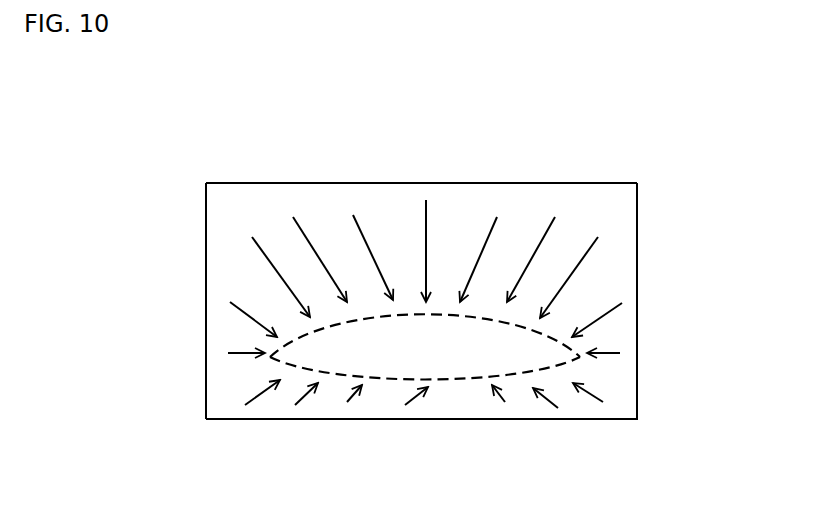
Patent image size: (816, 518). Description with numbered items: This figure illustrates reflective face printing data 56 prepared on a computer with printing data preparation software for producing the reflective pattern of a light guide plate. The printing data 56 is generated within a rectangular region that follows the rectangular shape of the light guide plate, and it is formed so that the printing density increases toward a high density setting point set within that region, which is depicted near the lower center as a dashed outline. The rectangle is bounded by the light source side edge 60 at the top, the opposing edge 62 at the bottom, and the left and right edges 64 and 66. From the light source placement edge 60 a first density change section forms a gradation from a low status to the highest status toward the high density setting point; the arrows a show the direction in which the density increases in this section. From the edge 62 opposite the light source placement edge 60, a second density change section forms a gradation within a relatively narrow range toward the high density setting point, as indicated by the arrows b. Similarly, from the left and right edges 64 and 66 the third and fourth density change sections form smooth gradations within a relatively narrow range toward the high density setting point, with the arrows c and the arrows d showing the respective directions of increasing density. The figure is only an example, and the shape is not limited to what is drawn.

The reflective face printing data 56 is at (633, 213).
The light source side edge 60 is at (435, 183).
The opposing edge 62 is at (448, 422).
The left edge 64 is at (206, 223).
The right edge 66 is at (637, 405).
The arrow a is at (282, 270).
The arrow b is at (262, 397).
The arrow c is at (252, 310).
The arrow d is at (604, 318).